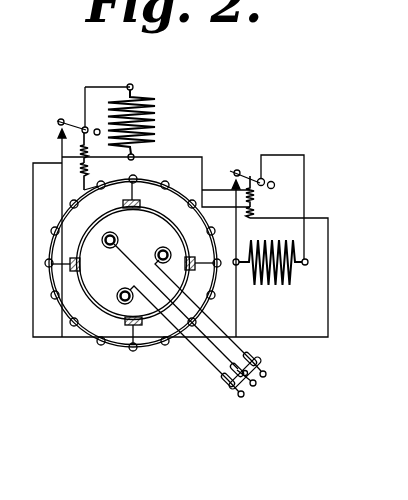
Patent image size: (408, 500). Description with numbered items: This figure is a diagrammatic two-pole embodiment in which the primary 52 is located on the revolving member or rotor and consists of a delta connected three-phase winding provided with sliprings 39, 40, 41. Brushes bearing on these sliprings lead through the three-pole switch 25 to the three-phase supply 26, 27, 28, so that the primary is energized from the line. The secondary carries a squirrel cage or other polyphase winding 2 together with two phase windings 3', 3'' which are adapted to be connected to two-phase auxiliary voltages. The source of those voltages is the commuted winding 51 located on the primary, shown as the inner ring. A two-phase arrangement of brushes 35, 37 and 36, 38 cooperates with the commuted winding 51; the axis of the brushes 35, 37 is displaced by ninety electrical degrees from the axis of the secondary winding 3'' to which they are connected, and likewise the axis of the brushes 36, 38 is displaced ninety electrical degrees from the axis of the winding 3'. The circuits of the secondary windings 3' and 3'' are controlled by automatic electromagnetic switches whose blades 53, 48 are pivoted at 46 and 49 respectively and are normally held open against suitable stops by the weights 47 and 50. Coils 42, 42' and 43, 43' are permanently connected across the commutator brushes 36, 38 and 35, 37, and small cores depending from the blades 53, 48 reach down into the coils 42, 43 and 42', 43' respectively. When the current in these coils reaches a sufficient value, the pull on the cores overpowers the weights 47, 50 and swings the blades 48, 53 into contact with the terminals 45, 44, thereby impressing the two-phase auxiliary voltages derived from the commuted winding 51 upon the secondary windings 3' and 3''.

The squirrel cage winding 2 is at (136, 351).
The phase winding 3' is at (139, 122).
The phase winding 3'' is at (270, 274).
The three-pole switch 25 is at (254, 370).
The three-phase supply 26 is at (265, 376).
The three-phase supply 27 is at (255, 385).
The three-phase supply 28 is at (243, 396).
The commutator brush 35 is at (144, 196).
The commutator brush 36 is at (199, 272).
The commutator brush 37 is at (123, 329).
The commutator brush 38 is at (69, 251).
The slipring 39 is at (170, 294).
The slipring 40 is at (164, 329).
The slipring 41 is at (200, 295).
The coil 42 is at (54, 148).
The coil 42' is at (271, 208).
The coil 43 is at (62, 177).
The coil 43' is at (290, 191).
The terminal 44 is at (57, 137).
The terminal 45 is at (234, 181).
The pivot 46 is at (84, 126).
The weight 47 is at (97, 135).
The switch blade 48 is at (249, 176).
The pivot 49 is at (263, 178).
The weight 50 is at (274, 183).
The commuted winding 51 is at (102, 309).
The primary 52 is at (86, 281).
The switch blade 53 is at (58, 120).